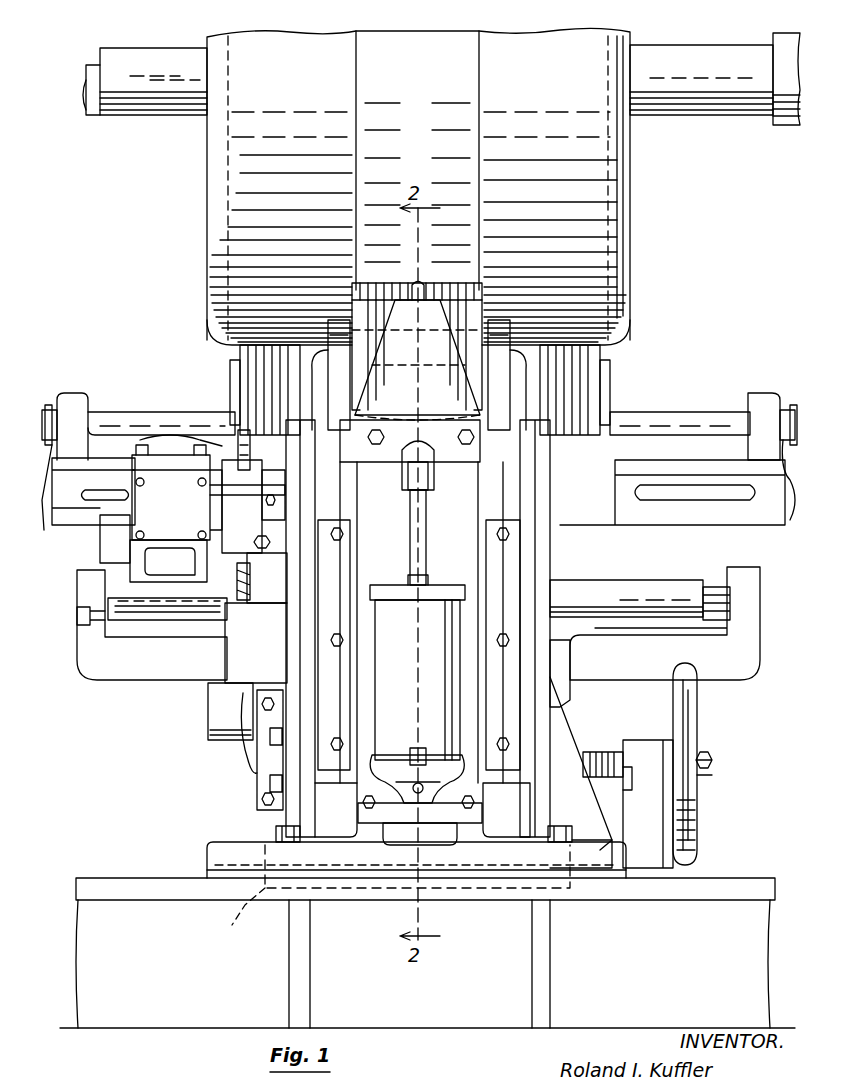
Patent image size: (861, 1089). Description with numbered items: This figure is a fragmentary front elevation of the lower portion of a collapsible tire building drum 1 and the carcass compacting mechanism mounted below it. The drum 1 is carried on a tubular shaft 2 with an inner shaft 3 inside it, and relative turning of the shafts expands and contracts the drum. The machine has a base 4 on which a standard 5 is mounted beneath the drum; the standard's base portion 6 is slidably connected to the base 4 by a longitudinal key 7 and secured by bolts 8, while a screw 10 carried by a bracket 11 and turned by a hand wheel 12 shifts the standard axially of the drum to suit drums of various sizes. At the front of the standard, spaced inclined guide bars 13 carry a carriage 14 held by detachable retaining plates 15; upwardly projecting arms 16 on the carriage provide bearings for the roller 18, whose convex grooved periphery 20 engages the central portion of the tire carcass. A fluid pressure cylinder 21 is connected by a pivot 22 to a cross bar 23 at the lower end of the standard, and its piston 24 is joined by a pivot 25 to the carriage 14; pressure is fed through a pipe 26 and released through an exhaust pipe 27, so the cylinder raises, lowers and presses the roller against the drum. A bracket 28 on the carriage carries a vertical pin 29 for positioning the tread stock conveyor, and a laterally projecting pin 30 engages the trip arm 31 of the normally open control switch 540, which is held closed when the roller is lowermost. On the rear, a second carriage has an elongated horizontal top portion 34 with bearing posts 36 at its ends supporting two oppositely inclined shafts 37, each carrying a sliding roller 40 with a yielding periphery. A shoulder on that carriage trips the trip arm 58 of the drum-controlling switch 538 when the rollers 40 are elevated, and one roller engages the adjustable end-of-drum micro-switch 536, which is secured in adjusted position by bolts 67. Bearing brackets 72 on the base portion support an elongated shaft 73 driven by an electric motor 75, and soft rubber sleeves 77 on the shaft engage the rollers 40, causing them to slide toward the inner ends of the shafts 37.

The tire building drum 1 is at (630, 206).
The tubular shaft 2 is at (700, 115).
The inner shaft 3 is at (95, 108).
The base 4 is at (116, 898).
The standard 5 is at (255, 740).
The base portion 6 is at (210, 860).
The longitudinal key 7 is at (395, 898).
The bolts 8 is at (276, 832).
The screw 10 is at (600, 752).
The bracket 11 is at (650, 798).
The hand wheel 12 is at (697, 720).
The inclined guide bars 13 is at (335, 508).
The carriage 14 is at (555, 660).
The retaining plates 15 is at (330, 565).
The arms 16 is at (340, 400).
The roller 18 is at (430, 325).
The convex grooved periphery 20 is at (440, 315).
The fluid pressure cylinder 21 is at (417, 680).
The pivot 22 is at (420, 793).
The cross bar 23 is at (383, 810).
The piston 24 is at (426, 525).
The pivot 25 is at (436, 470).
The pipe 26 is at (412, 748).
The exhaust pipe 27 is at (412, 585).
The bracket 28 is at (470, 300).
The vertical pin 29 is at (413, 295).
The laterally projecting pin 30 is at (225, 490).
The trip arm 31 is at (235, 603).
The horizontal top portion 34 is at (85, 540).
The bearing posts 36 is at (72, 393).
The shafts 37 is at (125, 412).
The roller 40 is at (230, 390).
The trip arm 58 is at (240, 440).
The bolts 67 is at (140, 440).
The bearing brackets 72 is at (125, 665).
The elongated shaft 73 is at (100, 615).
The electric motor 75 is at (210, 730).
The soft rubber sleeves 77 is at (630, 580).
The control switch S36 536 is at (100, 555).
The switch S38 538 is at (230, 548).
The control switch S40 540 is at (232, 650).